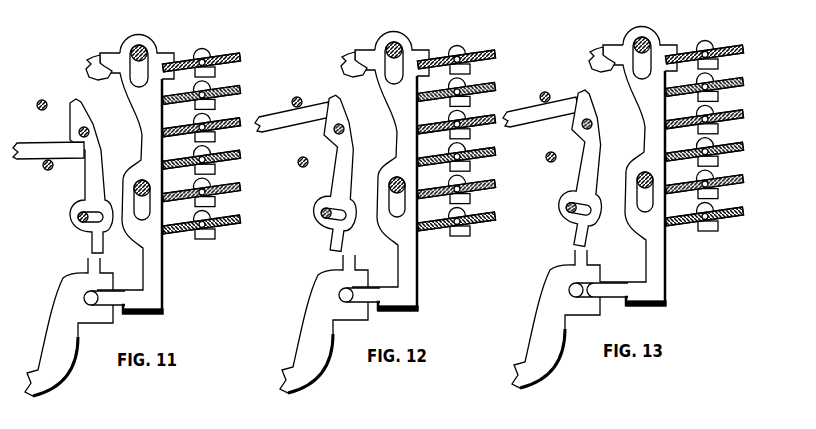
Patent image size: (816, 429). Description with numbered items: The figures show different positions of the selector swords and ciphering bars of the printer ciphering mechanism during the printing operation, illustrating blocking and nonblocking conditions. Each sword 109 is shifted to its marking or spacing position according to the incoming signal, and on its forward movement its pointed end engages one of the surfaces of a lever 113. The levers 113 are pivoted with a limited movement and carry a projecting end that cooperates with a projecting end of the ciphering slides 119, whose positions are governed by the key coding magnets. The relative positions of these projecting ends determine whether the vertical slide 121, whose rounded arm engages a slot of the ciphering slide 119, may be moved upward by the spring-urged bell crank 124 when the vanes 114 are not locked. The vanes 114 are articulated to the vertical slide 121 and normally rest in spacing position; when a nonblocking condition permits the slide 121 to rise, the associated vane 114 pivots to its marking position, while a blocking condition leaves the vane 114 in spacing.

In FIG. 11, the swords 109 is at (58, 143).
In FIG. 12, the swords 109 is at (293, 128).
In FIG. 13, the swords 109 is at (541, 122).
In FIG. 11, the levers 113 is at (98, 146).
In FIG. 12, the levers 113 is at (351, 173).
In FIG. 13, the levers 113 is at (597, 168).
In FIG. 11, the printer selector vanes 114 is at (230, 80).
In FIG. 12, the printer selector vanes 114 is at (478, 141).
In FIG. 13, the printer selector vanes 114 is at (716, 124).
In FIG. 11, the ciphering slides 119 is at (54, 382).
In FIG. 12, the ciphering slides 119 is at (324, 328).
In FIG. 13, the ciphering slides 119 is at (556, 322).
In FIG. 11, the vertical slide 121 is at (163, 260).
In FIG. 12, the vertical slide 121 is at (403, 172).
In FIG. 13, the vertical slide 121 is at (644, 167).
In FIG. 11, the bell cranks 124 is at (98, 53).
In FIG. 12, the bell cranks 124 is at (354, 64).
In FIG. 13, the bell cranks 124 is at (602, 59).